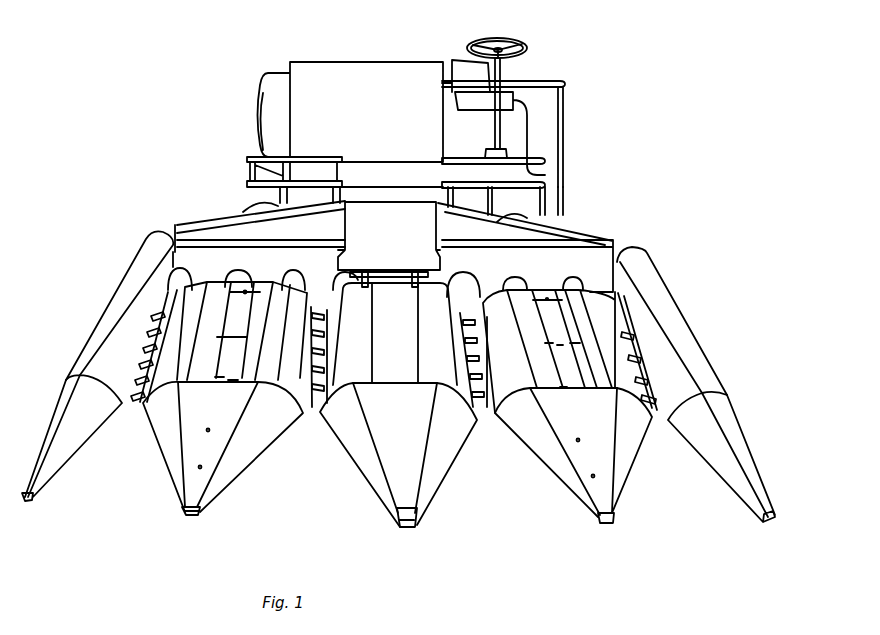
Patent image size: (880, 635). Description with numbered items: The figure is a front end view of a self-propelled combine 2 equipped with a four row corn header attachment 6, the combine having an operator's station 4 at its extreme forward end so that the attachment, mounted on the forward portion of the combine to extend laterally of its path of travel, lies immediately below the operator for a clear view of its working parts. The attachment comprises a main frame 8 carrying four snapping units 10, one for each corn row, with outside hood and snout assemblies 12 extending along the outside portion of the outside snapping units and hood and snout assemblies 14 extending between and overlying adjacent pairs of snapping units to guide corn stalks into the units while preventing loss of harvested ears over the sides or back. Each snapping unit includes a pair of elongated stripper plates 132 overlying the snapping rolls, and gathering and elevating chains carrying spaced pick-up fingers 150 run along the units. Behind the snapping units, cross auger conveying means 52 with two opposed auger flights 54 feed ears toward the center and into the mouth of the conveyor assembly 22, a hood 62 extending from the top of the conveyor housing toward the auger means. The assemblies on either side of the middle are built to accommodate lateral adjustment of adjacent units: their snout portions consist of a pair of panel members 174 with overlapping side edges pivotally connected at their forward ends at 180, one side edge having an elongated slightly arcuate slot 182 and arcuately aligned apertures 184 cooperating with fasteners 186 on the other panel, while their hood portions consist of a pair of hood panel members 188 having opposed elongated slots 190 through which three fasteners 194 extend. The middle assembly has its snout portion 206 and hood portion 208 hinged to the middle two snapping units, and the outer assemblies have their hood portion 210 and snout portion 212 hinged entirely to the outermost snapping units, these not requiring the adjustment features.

The self-propelled combine 2 is at (403, 58).
The operator's station 4 is at (508, 82).
The four row corn header attachment 6 is at (397, 376).
The main frame 8 is at (586, 221).
The snapping units 10 is at (399, 385).
The outside hood and snout assemblies 12 is at (397, 376).
The hood and snout assemblies 14 is at (401, 459).
The conveyor assembly 22 is at (396, 291).
The cross auger conveying means 52 is at (460, 280).
The auger flights 54 is at (285, 272).
The hood 62 is at (408, 260).
The stripper plates 132 is at (170, 393).
The pick-up fingers 150 is at (165, 311).
The panel members 174 is at (173, 473).
The pivotal connection 180 is at (192, 495).
The elongated slightly arcuate slot 182 is at (203, 470).
The arcuately aligned apertures 184 is at (210, 430).
The fasteners 186 is at (199, 466).
The hood panel members 188 is at (212, 277).
The elongated slots 190 is at (230, 337).
The fasteners 194 is at (232, 381).
The snout portion 206 is at (372, 478).
The hood portion 208 is at (400, 371).
The hood portion 210 is at (152, 253).
The snout portion 212 is at (57, 425).